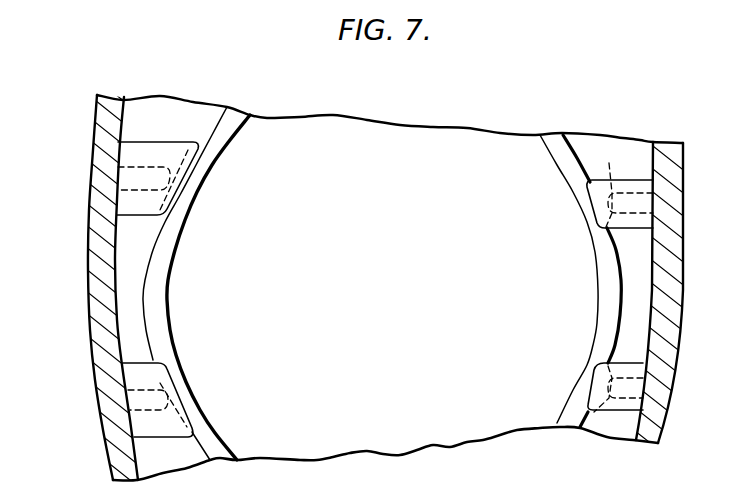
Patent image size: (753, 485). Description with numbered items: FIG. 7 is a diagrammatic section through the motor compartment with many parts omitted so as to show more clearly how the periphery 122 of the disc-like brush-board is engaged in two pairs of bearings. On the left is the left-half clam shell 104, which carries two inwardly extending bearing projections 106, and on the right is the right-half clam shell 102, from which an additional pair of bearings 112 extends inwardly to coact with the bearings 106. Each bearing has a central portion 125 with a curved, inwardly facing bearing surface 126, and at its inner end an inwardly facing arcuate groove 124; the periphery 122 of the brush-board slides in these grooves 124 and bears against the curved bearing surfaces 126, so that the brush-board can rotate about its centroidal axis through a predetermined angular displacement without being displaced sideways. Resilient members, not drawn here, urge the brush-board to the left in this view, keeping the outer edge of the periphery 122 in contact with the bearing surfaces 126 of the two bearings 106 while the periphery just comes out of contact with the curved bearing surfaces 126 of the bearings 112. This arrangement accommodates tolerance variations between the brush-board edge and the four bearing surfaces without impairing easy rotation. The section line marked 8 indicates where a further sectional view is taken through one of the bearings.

The right-half clam shell 102 is at (678, 262).
The left-half clam shell 104 is at (95, 365).
The bearing projections 106 is at (142, 142).
The bearings 112 is at (628, 230).
The periphery of the brush-board 122 is at (158, 300).
The arcuate groove 124 is at (168, 207).
The central portion 125 is at (141, 180).
The bearing surface 126 is at (196, 196).
The section line 8- 8 is at (230, 178).